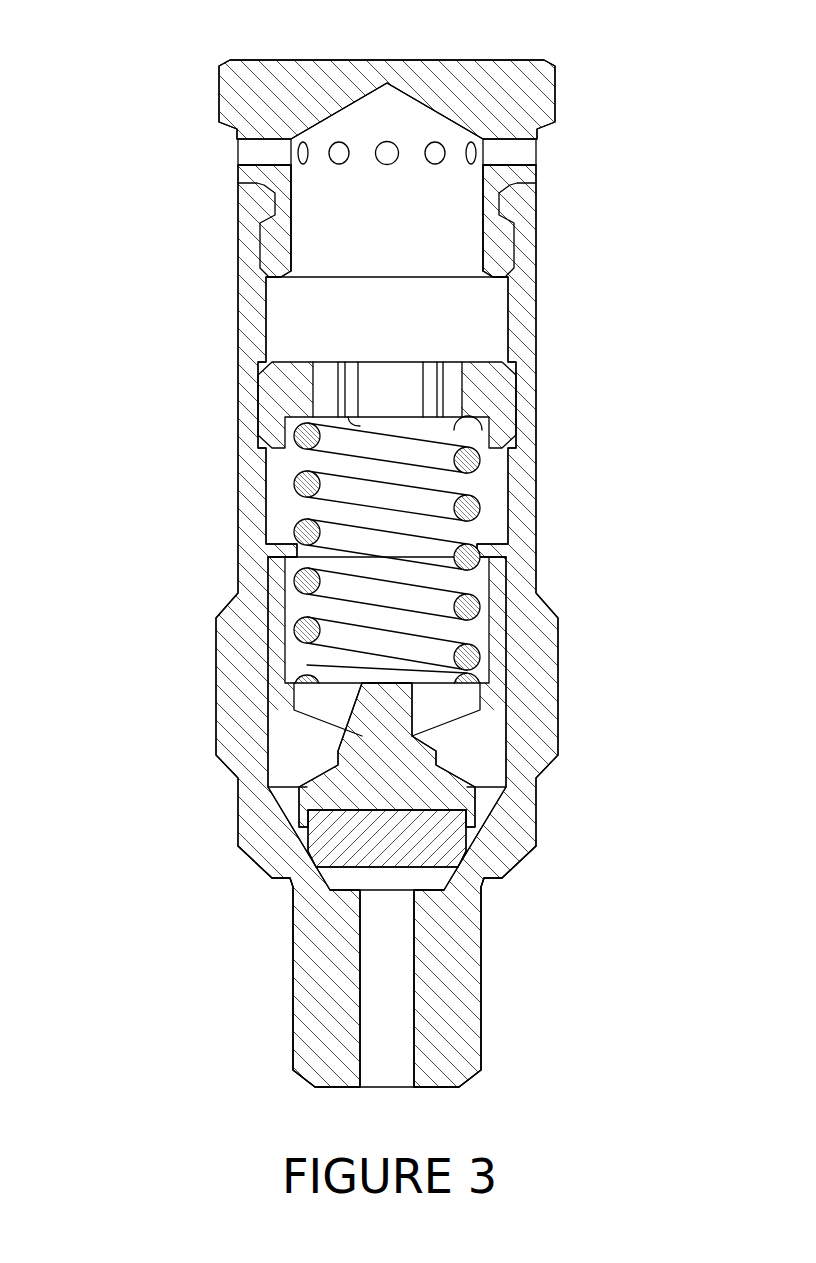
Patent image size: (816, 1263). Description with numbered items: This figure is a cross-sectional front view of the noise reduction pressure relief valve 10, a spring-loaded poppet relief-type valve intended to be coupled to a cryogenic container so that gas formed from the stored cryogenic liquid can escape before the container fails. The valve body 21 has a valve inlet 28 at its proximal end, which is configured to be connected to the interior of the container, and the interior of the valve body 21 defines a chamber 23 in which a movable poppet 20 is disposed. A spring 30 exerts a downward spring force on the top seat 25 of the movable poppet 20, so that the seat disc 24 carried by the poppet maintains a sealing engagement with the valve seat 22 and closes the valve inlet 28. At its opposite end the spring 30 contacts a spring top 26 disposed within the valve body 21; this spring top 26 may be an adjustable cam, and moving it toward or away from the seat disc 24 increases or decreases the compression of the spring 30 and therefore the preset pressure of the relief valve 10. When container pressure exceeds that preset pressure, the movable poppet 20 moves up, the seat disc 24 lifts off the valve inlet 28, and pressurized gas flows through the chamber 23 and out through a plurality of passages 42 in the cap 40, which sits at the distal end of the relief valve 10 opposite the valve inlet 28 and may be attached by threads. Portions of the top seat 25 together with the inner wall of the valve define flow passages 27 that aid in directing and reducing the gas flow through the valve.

The pressure relief valve 10 is at (106, 294).
The movable poppet 20 is at (339, 797).
The valve body 21 is at (520, 470).
The valve seat 22 is at (480, 827).
The chamber 23 is at (277, 478).
The seat disc 24 is at (360, 836).
The top seat 25 is at (490, 700).
The spring top 26 is at (488, 390).
The flow passages 27 is at (318, 702).
The valve inlet 28 is at (387, 1037).
The spring 30 is at (412, 548).
The cap 40 is at (527, 97).
The passages 42 is at (383, 143).